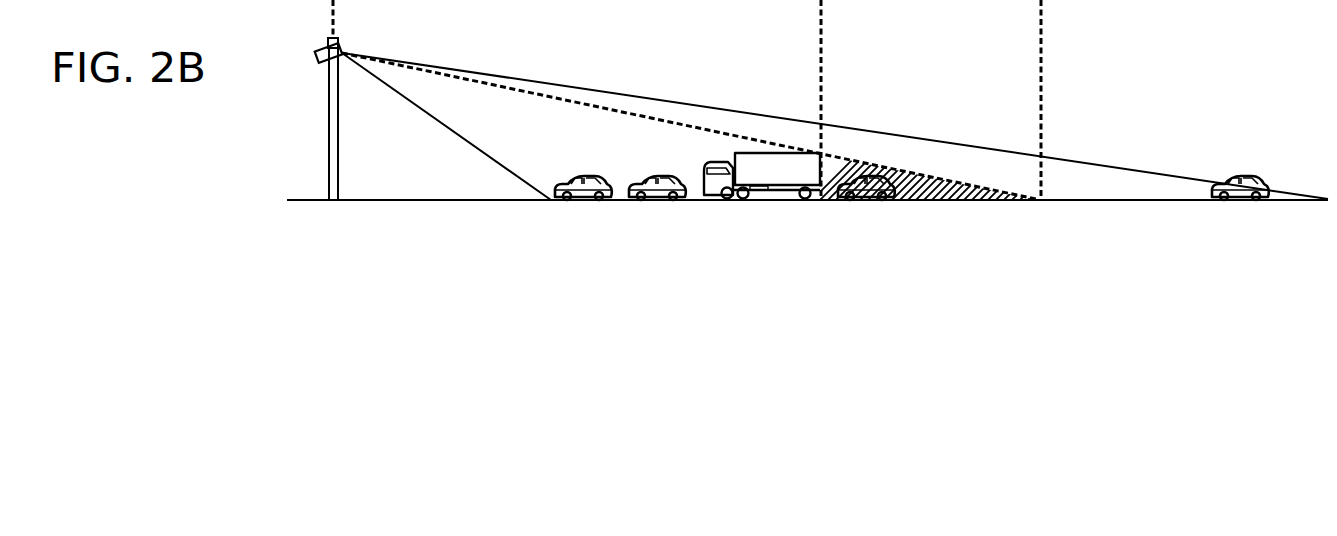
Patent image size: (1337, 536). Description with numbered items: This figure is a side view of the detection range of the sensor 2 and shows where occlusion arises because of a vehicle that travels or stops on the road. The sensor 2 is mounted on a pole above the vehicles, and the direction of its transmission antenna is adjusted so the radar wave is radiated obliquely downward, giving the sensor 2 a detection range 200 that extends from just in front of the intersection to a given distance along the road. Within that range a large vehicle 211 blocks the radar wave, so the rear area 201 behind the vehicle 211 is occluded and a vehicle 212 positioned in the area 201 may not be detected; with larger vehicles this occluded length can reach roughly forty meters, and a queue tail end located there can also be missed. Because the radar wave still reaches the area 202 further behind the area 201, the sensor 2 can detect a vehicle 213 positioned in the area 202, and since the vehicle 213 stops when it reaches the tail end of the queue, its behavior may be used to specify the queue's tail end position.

The sensor 2 is at (317, 58).
The detection range 200 is at (465, 105).
The rear area 201 is at (950, 192).
The area 202 is at (1108, 175).
The vehicle 211 is at (780, 167).
The vehicle 212 is at (862, 200).
The vehicle 213 is at (1240, 202).